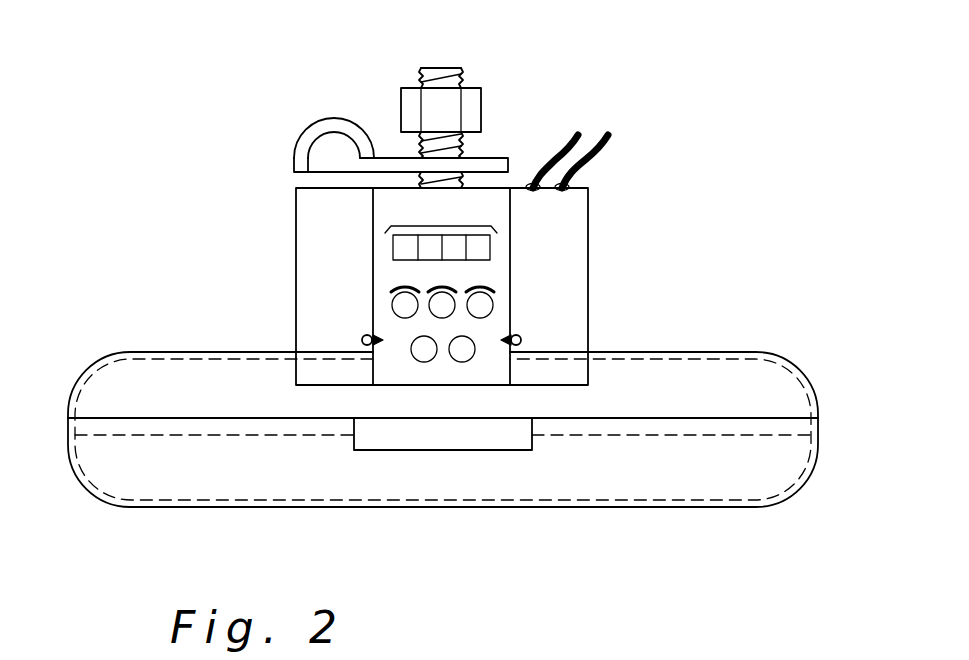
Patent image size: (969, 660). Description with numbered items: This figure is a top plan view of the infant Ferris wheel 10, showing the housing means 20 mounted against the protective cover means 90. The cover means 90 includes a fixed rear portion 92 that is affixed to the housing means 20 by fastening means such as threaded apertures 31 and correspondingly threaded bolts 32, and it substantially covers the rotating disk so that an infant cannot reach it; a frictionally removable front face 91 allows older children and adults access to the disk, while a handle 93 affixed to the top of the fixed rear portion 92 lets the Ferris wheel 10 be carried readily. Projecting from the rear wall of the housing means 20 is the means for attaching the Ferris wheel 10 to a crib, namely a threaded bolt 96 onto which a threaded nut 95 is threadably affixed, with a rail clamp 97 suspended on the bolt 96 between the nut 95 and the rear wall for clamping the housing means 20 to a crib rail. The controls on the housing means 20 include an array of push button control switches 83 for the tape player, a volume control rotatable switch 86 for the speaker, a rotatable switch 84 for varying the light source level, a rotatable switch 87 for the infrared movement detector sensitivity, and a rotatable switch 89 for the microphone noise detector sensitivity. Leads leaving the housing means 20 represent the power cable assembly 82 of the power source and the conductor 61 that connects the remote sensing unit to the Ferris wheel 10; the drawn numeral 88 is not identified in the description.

The infant Ferris wheel 10 is at (80, 592).
The housing means 20 is at (596, 215).
The threaded apertures 31 is at (365, 335).
The threaded bolts 32 is at (362, 341).
The conductor 61 is at (553, 148).
The power cable assembly 82 is at (612, 150).
The push button control switches 83 is at (440, 225).
The rotatable switch 84 is at (400, 307).
The volume control rotatable switch 86 is at (442, 297).
The rotatable switch 87 is at (424, 353).
The control knob 88 is at (482, 305).
The rotatable switch 89 is at (466, 353).
The protective cover means 90 is at (779, 343).
The frictionally removable front face 91 is at (115, 472).
The fixed rear portion 92 is at (133, 380).
The handle 93 is at (487, 437).
The threaded nut 95 is at (475, 106).
The threaded bolt 96 is at (443, 66).
The rail clamp 97 is at (330, 123).